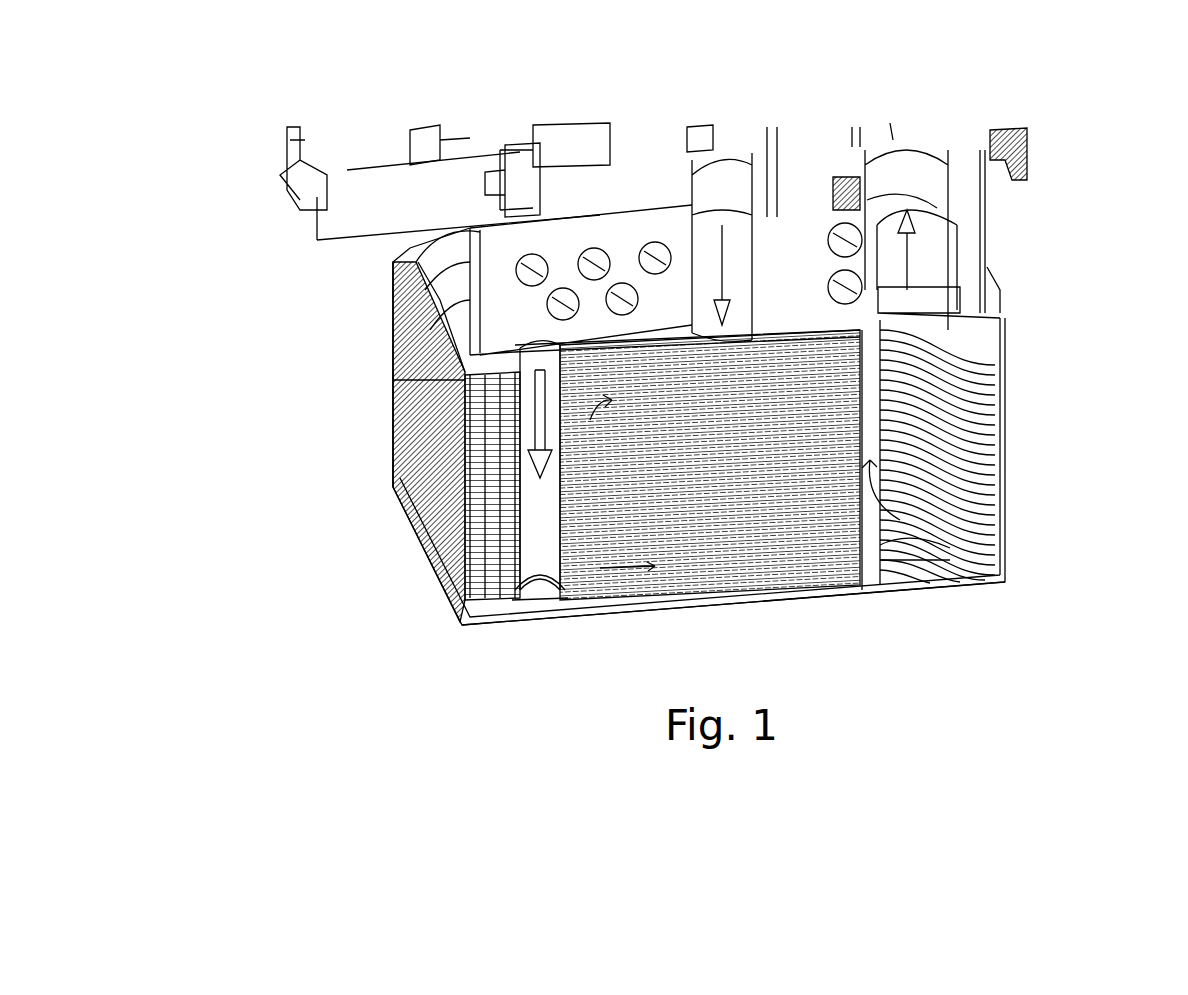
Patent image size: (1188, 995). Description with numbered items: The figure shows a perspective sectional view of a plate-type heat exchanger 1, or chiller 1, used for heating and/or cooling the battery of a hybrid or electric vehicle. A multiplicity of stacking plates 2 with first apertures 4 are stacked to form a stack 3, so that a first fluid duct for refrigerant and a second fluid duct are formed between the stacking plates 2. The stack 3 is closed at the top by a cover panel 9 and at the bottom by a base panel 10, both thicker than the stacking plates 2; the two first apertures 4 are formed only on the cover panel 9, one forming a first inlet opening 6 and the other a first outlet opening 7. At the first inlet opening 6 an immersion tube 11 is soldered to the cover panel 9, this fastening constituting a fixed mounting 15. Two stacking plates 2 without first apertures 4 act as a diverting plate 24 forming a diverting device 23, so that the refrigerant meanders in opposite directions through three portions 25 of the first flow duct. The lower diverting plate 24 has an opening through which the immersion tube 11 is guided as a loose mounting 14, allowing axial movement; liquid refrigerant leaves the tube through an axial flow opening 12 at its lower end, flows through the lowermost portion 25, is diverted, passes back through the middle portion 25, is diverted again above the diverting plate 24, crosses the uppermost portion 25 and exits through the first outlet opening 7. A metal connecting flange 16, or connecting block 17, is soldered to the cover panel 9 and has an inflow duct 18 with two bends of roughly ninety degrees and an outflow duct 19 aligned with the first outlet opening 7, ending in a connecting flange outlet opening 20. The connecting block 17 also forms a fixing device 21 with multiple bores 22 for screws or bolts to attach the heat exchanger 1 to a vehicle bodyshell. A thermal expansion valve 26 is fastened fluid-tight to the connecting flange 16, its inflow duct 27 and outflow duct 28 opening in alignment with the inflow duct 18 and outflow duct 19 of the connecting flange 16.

The heat exchanger 1 is at (247, 692).
The stacking plates 2 is at (395, 335).
The stack 3 is at (338, 425).
The first apertures 4 is at (518, 610).
The first inlet opening 6 is at (395, 380).
The first outlet opening 7 is at (1002, 306).
The cover panel 9 is at (395, 305).
The base panel 10 is at (803, 593).
The immersion tube 11 is at (455, 587).
The flow opening 12 is at (537, 593).
The loose mounting 14 is at (435, 565).
The fixed mounting 15 is at (395, 430).
The connecting flange 16 is at (441, 181).
The connecting block 17 is at (441, 181).
The inflow duct 18 is at (703, 272).
The outflow duct 19 is at (925, 272).
The connecting flange outlet opening 20 is at (965, 318).
The fixing device 21 is at (510, 295).
The bores 22 is at (620, 292).
The diverting device 23 is at (706, 465).
The diverting plate 24 is at (915, 398).
The portions 25 is at (817, 397).
The thermal expansion valve 26 is at (340, 210).
The inflow duct 27 is at (713, 183).
The outflow duct 28 is at (912, 160).